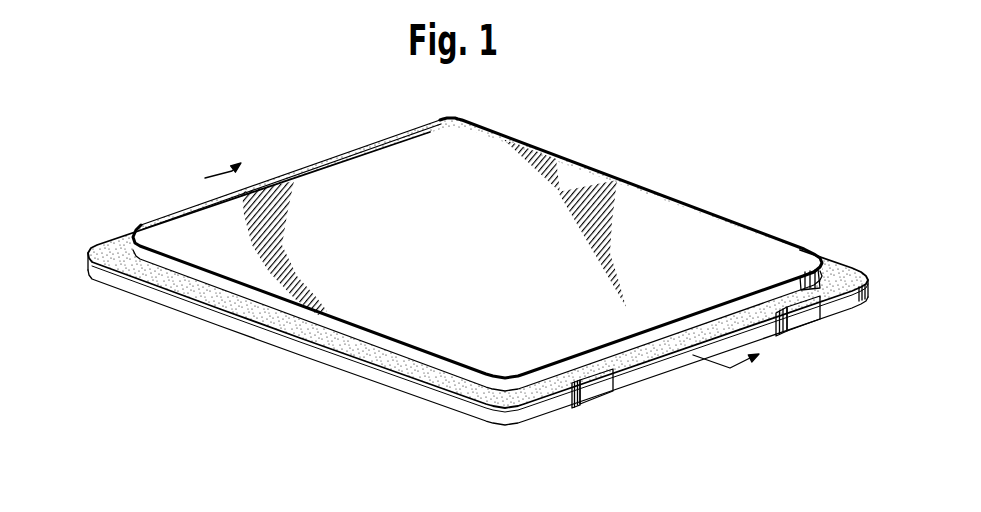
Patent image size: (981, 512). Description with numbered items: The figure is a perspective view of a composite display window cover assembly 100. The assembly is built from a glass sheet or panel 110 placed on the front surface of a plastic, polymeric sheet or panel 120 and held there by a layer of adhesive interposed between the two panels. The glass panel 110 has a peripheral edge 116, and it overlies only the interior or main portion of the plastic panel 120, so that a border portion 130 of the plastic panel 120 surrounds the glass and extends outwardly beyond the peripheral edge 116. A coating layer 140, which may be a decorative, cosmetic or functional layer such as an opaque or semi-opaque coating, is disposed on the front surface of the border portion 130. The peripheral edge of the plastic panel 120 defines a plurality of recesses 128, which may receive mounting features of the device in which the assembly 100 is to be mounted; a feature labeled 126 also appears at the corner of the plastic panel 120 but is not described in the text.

The composite display window cover assembly 100 is at (349, 113).
The glass sheet or panel 110 is at (630, 217).
The peripheral edge 116 is at (696, 318).
The plastic sheet or panel 120 is at (405, 398).
The corner tab 126 is at (838, 303).
The recesses 128 is at (588, 395).
The border portion 130 is at (246, 312).
The coating layer 140 is at (96, 243).